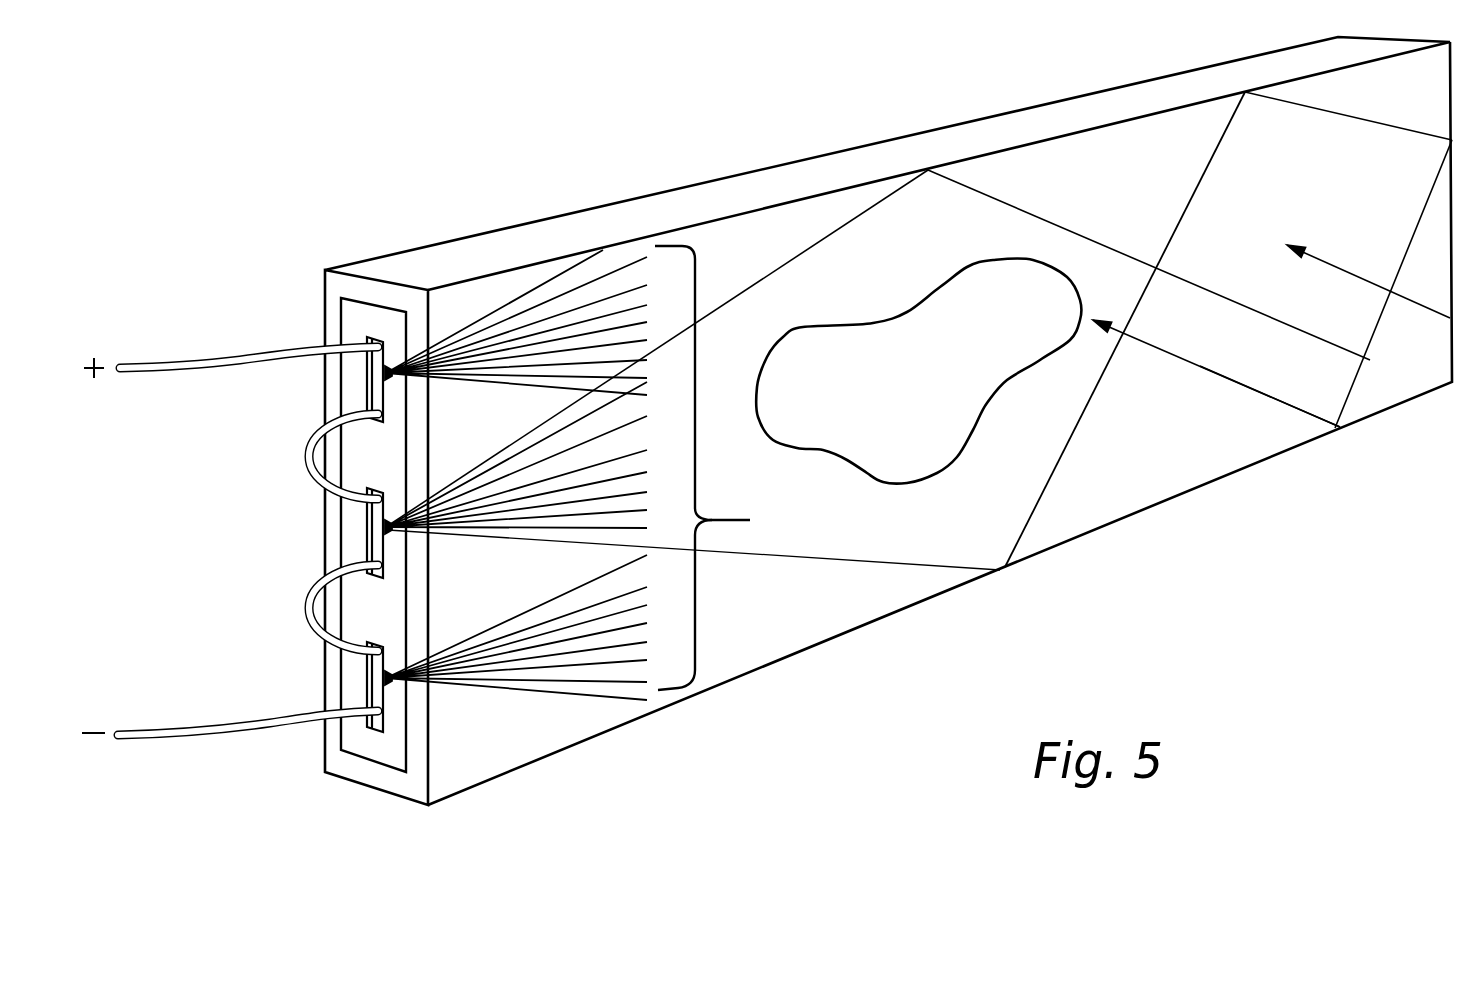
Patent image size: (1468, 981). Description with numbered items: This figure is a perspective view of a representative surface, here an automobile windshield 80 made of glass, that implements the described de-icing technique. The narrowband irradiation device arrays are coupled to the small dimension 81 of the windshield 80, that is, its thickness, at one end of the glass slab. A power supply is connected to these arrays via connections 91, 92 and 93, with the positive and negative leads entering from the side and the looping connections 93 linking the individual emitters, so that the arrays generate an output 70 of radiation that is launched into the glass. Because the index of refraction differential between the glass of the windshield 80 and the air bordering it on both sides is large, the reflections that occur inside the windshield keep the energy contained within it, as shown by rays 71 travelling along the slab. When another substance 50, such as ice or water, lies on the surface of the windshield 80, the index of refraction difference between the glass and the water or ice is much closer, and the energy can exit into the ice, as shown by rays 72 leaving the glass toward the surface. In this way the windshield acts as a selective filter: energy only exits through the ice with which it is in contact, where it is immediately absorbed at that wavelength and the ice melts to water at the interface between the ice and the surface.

The substance 50 is at (968, 333).
The output 70 is at (750, 520).
The rays 71 is at (1045, 487).
The rays 72 is at (1267, 400).
The windshield 80 is at (684, 182).
The dimension 81 is at (393, 283).
The connection 91 is at (212, 363).
The connection 92 is at (199, 740).
The connection 93 is at (302, 450).